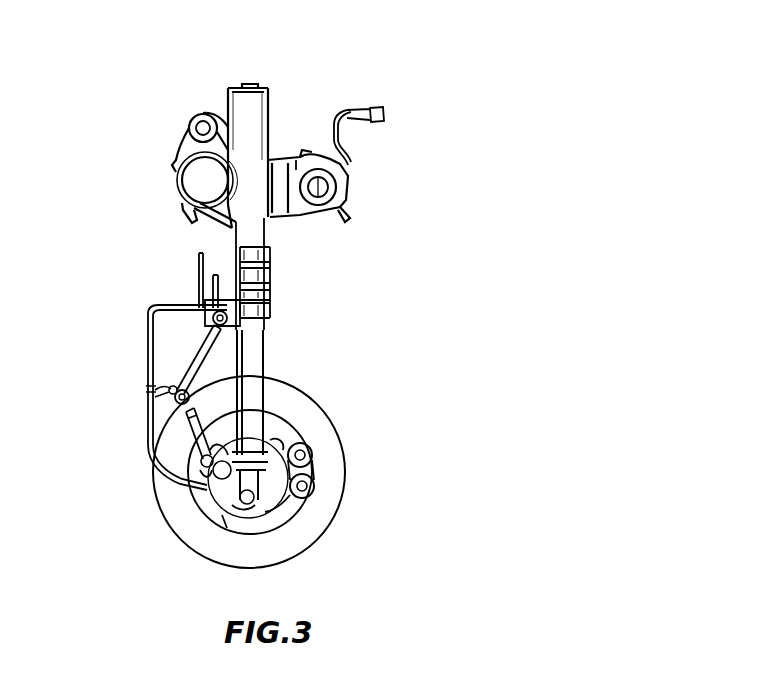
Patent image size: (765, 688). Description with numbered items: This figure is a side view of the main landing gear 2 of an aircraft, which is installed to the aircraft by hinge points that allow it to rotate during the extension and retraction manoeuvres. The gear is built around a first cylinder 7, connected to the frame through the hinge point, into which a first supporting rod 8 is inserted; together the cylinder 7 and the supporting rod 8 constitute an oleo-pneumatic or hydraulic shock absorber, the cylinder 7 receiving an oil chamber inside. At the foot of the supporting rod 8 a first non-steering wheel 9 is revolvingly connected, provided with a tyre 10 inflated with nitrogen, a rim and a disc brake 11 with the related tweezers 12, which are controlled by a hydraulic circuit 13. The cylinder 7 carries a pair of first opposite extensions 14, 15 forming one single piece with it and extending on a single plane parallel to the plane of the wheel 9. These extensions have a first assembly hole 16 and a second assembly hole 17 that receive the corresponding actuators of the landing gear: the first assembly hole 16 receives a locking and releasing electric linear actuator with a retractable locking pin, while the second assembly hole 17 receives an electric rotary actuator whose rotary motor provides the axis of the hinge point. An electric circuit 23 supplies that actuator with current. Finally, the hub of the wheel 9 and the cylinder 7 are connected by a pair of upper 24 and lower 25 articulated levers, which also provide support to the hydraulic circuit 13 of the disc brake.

The main landing gear 2 is at (115, 445).
The first cylinder 7 is at (262, 395).
The first supporting rod 8 is at (250, 130).
The first not steering wheel 9 is at (350, 548).
The tyre 10 is at (203, 555).
The disc brake 11 is at (207, 490).
The tweezers 12 is at (313, 458).
The hydraulic circuit 13 is at (143, 358).
The first extension 14 is at (189, 131).
The first extension 15 is at (293, 160).
The first assembly hole 16 is at (203, 177).
The second assembly hole 17 is at (343, 196).
The electric circuit 23 is at (347, 146).
The upper articulated lever 24 is at (203, 358).
The lower articulated lever 25 is at (207, 413).